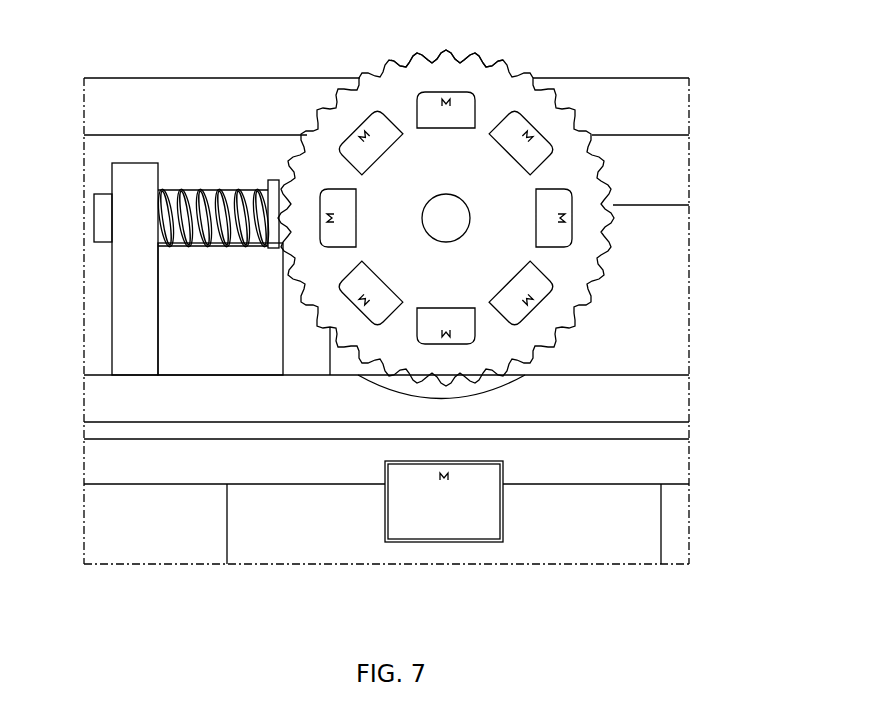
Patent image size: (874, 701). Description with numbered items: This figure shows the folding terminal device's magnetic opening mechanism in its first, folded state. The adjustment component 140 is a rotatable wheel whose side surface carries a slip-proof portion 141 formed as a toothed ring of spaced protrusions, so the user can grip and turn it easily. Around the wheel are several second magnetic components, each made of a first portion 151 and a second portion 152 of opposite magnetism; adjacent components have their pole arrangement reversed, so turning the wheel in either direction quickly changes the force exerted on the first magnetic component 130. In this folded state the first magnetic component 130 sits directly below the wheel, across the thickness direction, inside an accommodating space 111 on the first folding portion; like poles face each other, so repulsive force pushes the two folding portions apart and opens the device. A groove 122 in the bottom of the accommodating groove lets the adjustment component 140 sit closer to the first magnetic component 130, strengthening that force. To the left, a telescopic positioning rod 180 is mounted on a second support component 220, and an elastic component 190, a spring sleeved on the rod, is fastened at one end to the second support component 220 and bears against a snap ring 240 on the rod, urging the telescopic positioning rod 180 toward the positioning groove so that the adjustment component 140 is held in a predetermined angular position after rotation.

The accommodating space 111 is at (604, 533).
The groove 122 is at (495, 392).
The first magnetic component 130 is at (434, 527).
The adjustment component 140 is at (357, 100).
The slip-proof portion 141 is at (405, 60).
The first portion 151 is at (460, 318).
The second portion 152 is at (460, 332).
The telescopic positioning rod 180 is at (100, 217).
The elastic component 190 is at (230, 191).
The second support component 220 is at (142, 188).
The snap ring 240 is at (275, 182).